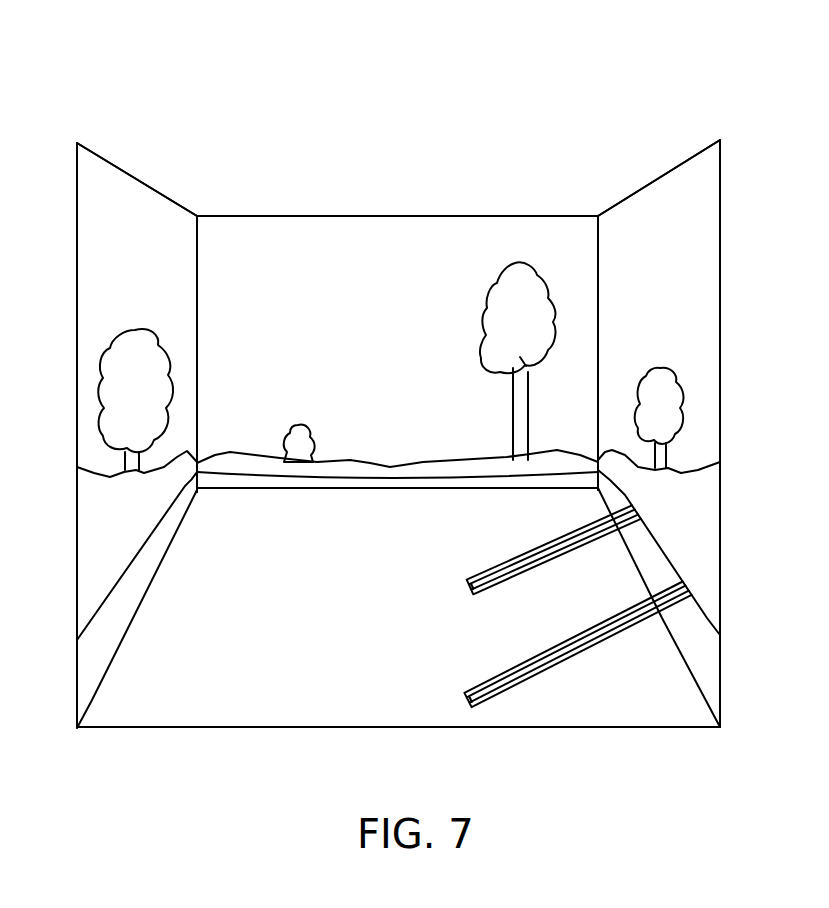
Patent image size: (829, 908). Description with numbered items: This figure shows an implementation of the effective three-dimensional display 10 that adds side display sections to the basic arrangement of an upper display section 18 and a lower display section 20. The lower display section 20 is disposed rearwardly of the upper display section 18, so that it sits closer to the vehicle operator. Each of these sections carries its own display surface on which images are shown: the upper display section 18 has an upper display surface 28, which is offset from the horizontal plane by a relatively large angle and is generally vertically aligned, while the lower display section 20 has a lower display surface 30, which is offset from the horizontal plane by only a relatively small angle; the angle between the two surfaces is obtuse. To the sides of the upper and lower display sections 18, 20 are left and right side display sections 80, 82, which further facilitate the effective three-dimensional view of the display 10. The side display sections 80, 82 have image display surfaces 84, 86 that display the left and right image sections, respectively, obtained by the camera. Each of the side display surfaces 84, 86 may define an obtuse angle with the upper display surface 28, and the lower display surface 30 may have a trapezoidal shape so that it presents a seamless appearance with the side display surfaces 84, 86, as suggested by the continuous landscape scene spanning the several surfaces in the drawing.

The display 10 is at (100, 92).
The upper display section 18 is at (410, 216).
The lower display section 20 is at (210, 730).
The upper display surface 28 is at (393, 378).
The lower display surface 30 is at (330, 614).
The left side display section 80 is at (138, 180).
The right side display section 82 is at (645, 182).
The left side image display surface 84 is at (147, 289).
The right side image display surface 86 is at (677, 280).